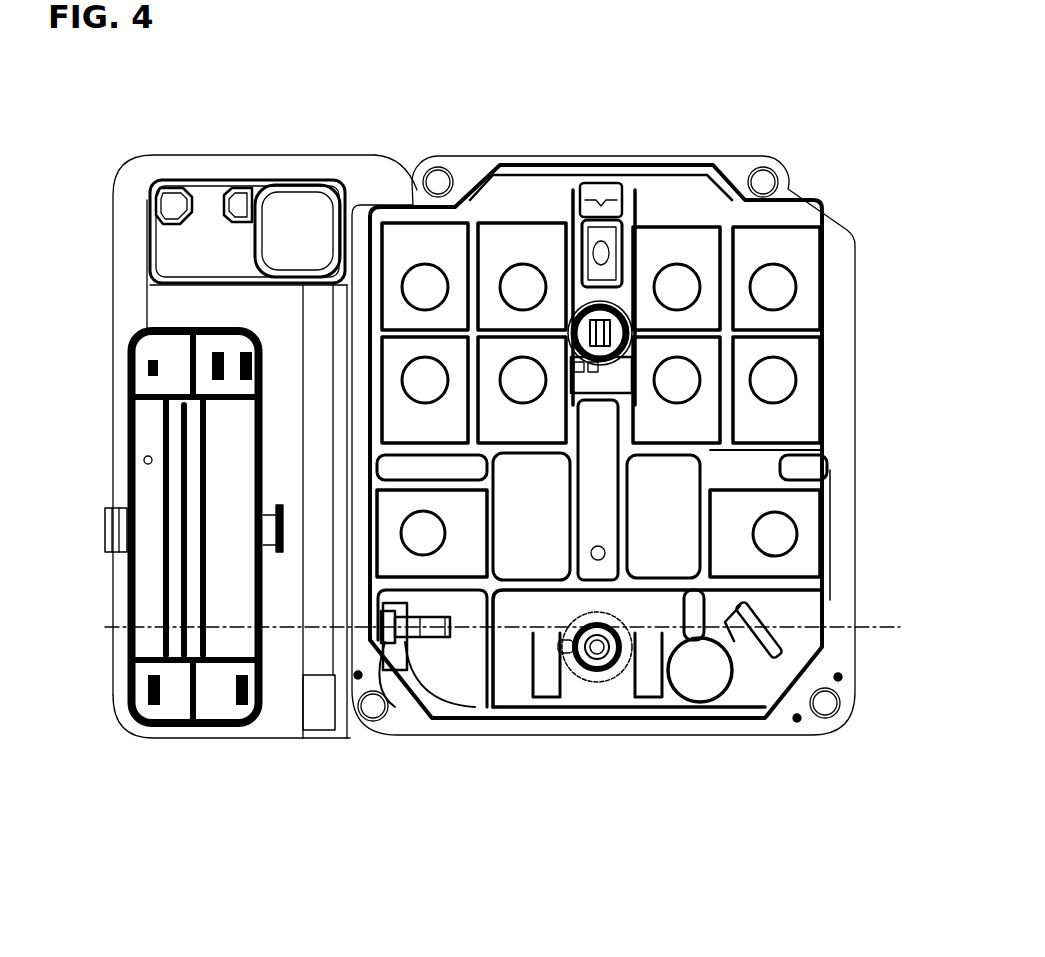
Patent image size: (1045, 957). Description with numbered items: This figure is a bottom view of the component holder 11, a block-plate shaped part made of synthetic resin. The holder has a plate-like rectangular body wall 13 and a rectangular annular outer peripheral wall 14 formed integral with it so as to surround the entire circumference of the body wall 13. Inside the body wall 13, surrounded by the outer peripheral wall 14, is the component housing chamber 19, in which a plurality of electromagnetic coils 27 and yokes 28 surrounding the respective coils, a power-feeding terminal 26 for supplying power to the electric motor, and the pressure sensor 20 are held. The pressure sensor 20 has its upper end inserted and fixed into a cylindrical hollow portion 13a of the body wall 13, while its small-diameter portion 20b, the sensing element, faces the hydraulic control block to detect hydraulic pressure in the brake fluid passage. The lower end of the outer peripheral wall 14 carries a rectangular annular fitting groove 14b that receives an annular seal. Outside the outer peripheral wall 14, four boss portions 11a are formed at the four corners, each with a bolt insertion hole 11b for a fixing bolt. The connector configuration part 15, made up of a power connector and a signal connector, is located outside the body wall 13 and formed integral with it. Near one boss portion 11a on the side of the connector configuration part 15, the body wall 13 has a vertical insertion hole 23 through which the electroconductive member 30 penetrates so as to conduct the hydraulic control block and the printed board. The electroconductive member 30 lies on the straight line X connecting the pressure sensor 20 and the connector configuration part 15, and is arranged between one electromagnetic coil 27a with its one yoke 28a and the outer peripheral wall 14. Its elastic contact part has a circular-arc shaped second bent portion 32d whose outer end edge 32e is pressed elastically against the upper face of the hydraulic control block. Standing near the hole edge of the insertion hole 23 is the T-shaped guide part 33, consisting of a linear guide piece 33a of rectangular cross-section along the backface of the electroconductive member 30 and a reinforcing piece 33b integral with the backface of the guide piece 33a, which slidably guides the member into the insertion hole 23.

The component holder 11 is at (855, 570).
The boss portion 11a is at (465, 165).
The bolt insertion hole 11b is at (433, 170).
The body wall 13 is at (730, 470).
The cylindrical hollow portion 13a is at (620, 683).
The outer peripheral wall 14 is at (853, 262).
The rectangular annular fitting groove 14b is at (842, 523).
The connector configuration part 15 is at (103, 645).
The component housing chamber 19 is at (683, 433).
The pressure sensor 20 is at (600, 697).
The small-diameter portion 20b is at (587, 657).
The insertion hole 23 is at (412, 613).
The power-feeding terminal 26 is at (624, 307).
The electromagnetic coil 27 is at (418, 280).
The one electromagnetic coil 27a is at (420, 540).
The yoke 28 is at (448, 240).
The one yoke 28a is at (393, 508).
The electroconductive member 30 is at (418, 728).
The second bent portion 32d is at (447, 613).
The outer end edge 32e is at (455, 652).
The guide part 33 is at (367, 613).
The guide piece 33a is at (378, 690).
The reinforcing piece 33b is at (360, 636).
The straight line X is at (863, 627).